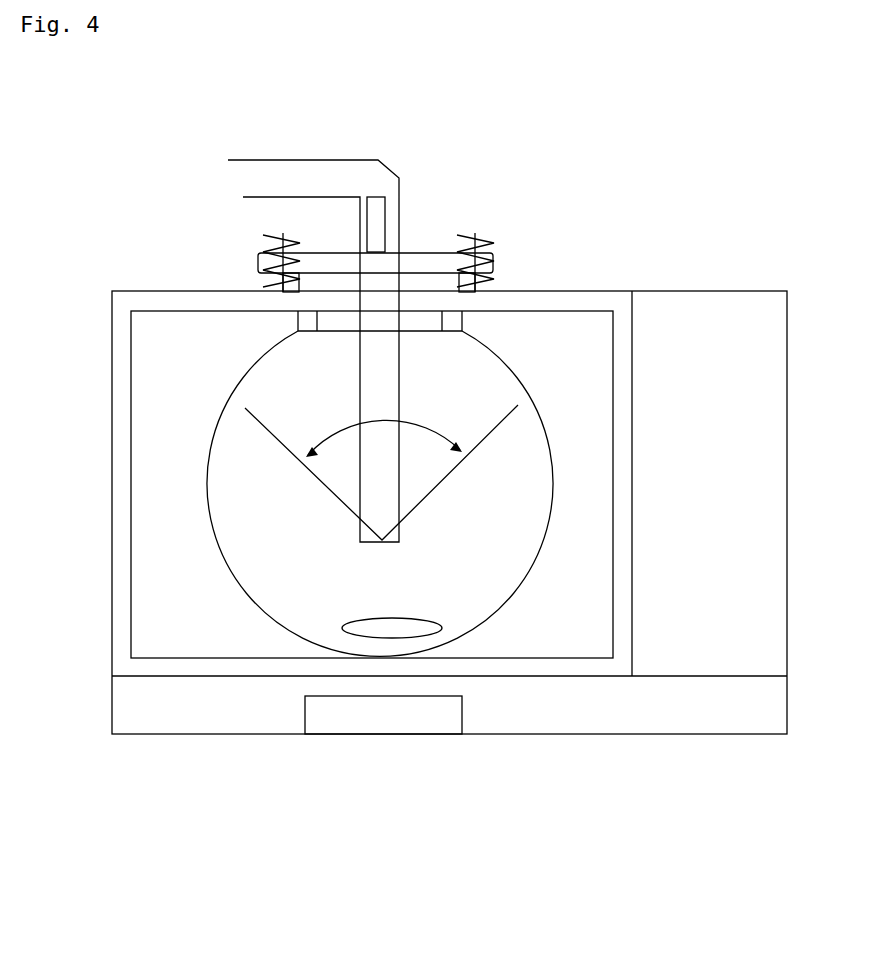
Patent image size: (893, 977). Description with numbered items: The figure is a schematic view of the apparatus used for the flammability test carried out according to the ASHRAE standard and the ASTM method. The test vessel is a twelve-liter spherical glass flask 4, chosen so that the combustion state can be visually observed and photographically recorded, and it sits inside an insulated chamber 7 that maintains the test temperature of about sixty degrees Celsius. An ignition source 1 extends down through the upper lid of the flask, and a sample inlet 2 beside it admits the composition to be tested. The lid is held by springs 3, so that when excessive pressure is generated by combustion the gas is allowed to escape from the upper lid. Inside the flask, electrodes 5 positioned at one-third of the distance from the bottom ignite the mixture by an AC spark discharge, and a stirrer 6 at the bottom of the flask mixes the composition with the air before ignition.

The ignition source 1 is at (291, 334).
The sample inlet 2 is at (376, 190).
The springs 3 is at (320, 235).
The 12-liter glass flask 4 is at (227, 503).
The electrodes 5 is at (381, 494).
The stirrer 6 is at (383, 639).
The insulated chamber 7 is at (691, 635).